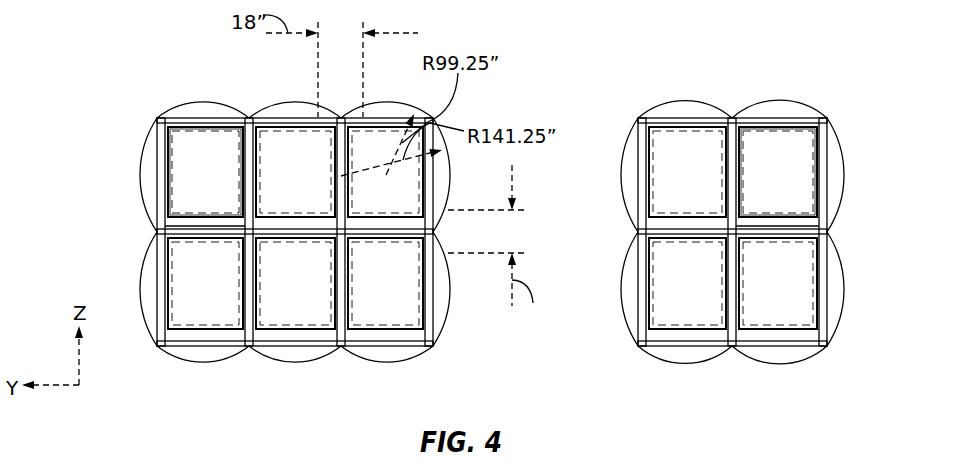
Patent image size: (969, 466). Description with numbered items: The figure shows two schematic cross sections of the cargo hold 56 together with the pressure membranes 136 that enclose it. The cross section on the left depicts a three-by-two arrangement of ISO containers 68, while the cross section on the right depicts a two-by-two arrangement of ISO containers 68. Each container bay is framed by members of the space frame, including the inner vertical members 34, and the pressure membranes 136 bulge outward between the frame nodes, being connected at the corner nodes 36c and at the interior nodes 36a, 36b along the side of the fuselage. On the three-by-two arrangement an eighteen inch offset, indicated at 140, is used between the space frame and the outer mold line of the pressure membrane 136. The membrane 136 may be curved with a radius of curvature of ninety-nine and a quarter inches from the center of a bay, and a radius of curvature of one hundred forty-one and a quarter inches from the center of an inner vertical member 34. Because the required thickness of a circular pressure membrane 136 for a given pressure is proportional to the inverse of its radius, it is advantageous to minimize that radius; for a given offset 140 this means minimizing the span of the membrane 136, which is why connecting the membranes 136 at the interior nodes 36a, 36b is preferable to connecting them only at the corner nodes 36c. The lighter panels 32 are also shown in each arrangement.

The panel 32 is at (388, 347).
The inner vertical member 34 is at (438, 318).
The interior node 36a is at (343, 117).
The interior node 36b is at (250, 117).
The corner node 36c is at (157, 117).
The cargo hold 56 is at (176, 224).
The ISO container 68 is at (216, 187).
The pressure membrane 136 is at (152, 152).
The eighteen inch offset 140 is at (514, 185).